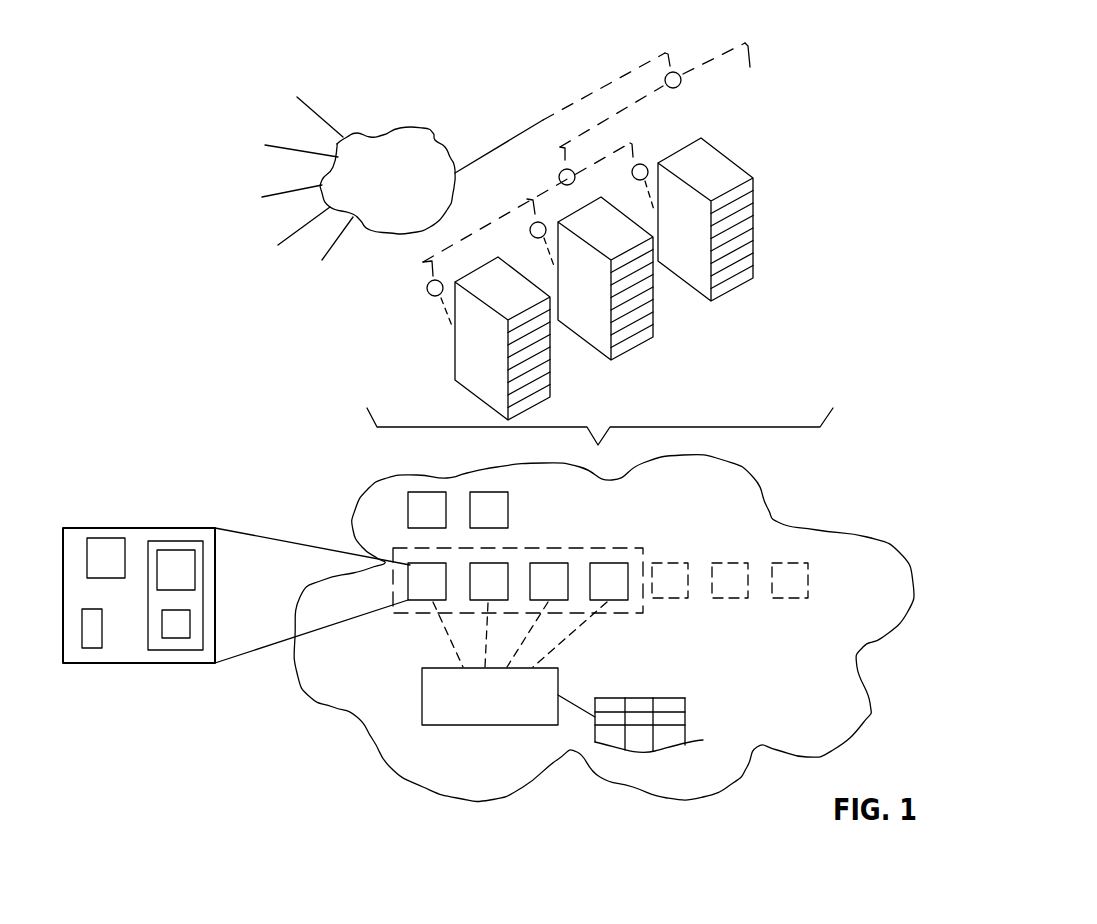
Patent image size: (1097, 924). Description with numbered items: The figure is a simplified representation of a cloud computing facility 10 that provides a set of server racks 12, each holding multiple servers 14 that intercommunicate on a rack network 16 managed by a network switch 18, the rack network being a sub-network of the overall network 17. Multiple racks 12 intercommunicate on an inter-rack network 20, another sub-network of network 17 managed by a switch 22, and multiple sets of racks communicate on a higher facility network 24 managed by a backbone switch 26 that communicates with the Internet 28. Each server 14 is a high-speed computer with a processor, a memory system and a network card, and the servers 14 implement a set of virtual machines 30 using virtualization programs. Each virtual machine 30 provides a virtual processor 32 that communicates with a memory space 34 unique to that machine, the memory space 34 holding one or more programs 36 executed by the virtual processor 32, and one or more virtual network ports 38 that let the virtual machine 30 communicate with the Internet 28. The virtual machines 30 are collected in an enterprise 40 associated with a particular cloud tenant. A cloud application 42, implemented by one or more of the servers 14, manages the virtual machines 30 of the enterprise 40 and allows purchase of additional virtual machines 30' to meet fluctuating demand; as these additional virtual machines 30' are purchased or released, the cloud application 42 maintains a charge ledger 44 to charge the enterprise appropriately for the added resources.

The cloud computing facility 10 is at (868, 126).
The server rack 12 is at (633, 267).
The server 14 is at (752, 245).
The rack network 16 is at (447, 323).
The network 17 is at (786, 43).
The network switch 18 is at (427, 286).
The inter-rack network 20 is at (497, 217).
The switch 22 is at (573, 170).
The facility network 24 is at (707, 60).
The backbone switch 26 is at (680, 92).
The Internet 28 is at (405, 196).
The virtual machine 30 is at (285, 595).
The additional virtual machine 30' is at (730, 619).
The virtual processor 32 is at (108, 538).
The memory space 34 is at (182, 541).
The program 36 is at (185, 625).
The virtual network port 38 is at (102, 638).
The enterprise 40 is at (592, 548).
The cloud application 42 is at (501, 711).
The charge ledger 44 is at (688, 713).